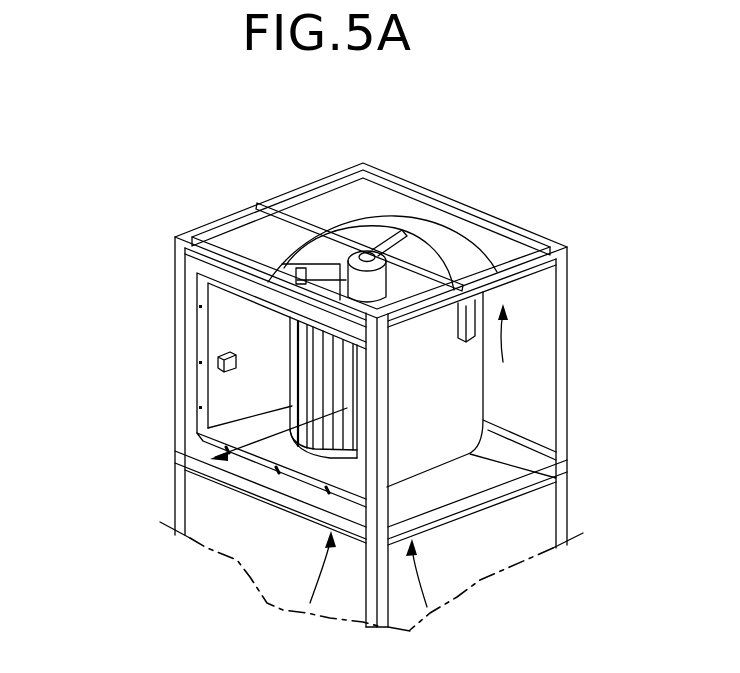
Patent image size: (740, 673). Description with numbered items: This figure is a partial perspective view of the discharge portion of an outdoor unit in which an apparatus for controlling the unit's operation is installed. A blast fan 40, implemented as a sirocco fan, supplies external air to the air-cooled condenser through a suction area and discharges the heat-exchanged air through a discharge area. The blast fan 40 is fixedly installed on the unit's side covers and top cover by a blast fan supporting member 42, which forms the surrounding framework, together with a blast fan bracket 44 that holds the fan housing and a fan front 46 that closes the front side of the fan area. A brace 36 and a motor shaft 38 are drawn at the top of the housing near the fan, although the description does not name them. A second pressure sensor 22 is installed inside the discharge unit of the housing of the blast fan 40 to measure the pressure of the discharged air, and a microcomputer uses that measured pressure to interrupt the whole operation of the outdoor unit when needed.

The second pressure sensor 22 is at (226, 370).
The support brace 36 is at (336, 243).
The motor shaft 38 is at (366, 257).
The blast fan 40 is at (460, 393).
The blast fan supporting member 42 is at (197, 236).
The blast fan bracket 44 is at (278, 240).
The fan front 46 is at (191, 294).